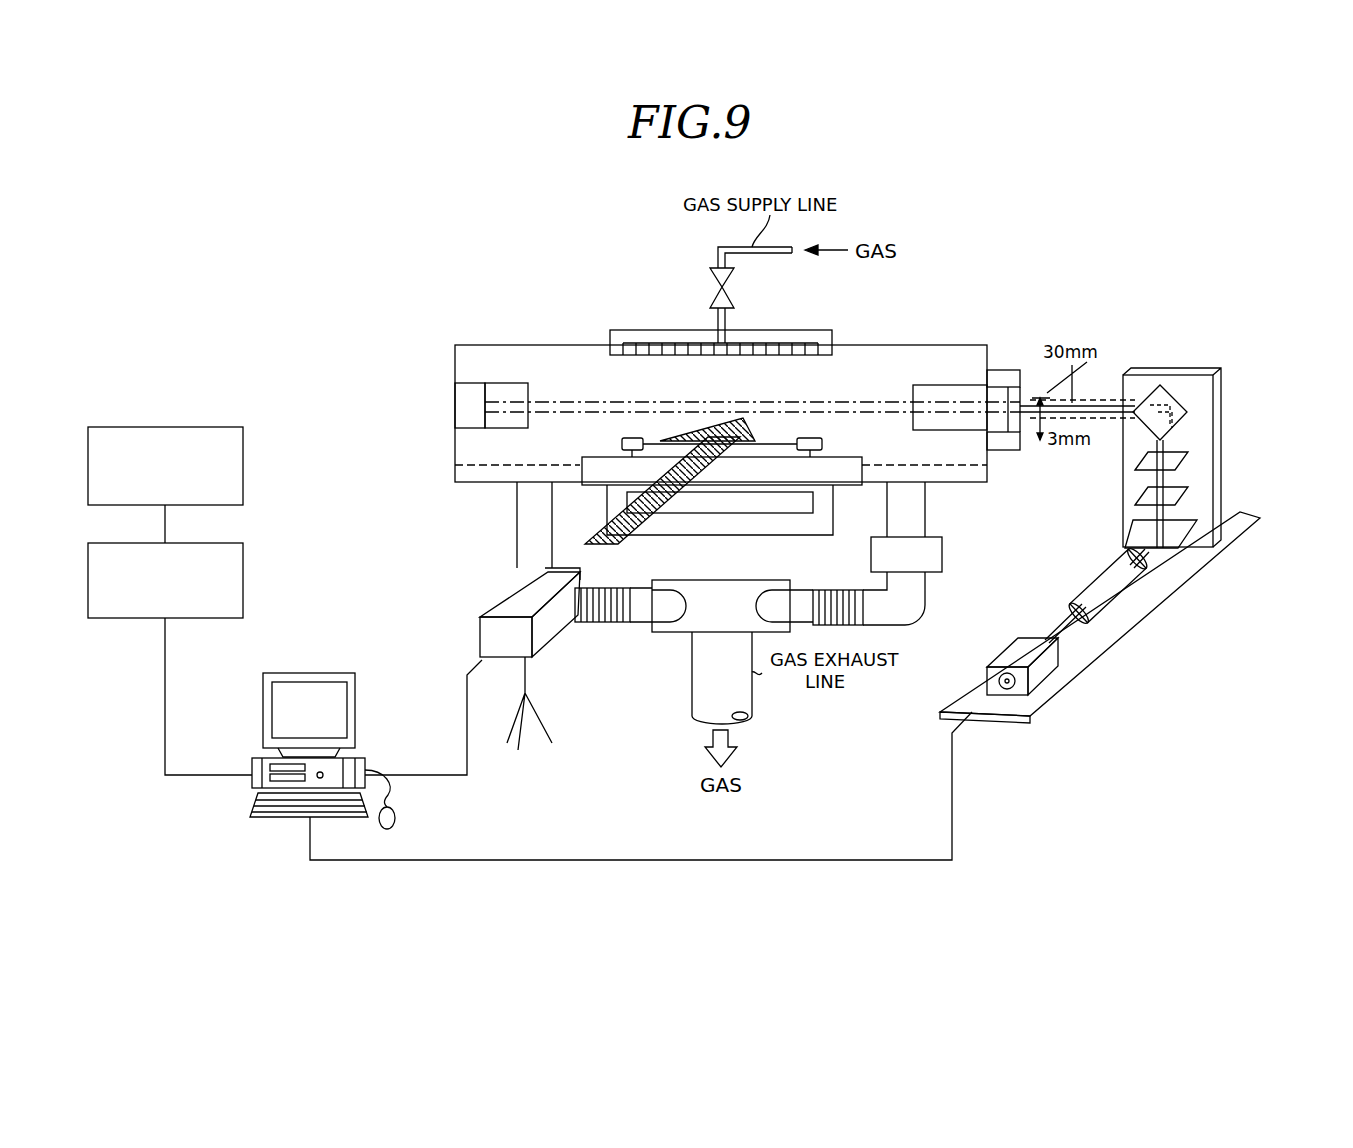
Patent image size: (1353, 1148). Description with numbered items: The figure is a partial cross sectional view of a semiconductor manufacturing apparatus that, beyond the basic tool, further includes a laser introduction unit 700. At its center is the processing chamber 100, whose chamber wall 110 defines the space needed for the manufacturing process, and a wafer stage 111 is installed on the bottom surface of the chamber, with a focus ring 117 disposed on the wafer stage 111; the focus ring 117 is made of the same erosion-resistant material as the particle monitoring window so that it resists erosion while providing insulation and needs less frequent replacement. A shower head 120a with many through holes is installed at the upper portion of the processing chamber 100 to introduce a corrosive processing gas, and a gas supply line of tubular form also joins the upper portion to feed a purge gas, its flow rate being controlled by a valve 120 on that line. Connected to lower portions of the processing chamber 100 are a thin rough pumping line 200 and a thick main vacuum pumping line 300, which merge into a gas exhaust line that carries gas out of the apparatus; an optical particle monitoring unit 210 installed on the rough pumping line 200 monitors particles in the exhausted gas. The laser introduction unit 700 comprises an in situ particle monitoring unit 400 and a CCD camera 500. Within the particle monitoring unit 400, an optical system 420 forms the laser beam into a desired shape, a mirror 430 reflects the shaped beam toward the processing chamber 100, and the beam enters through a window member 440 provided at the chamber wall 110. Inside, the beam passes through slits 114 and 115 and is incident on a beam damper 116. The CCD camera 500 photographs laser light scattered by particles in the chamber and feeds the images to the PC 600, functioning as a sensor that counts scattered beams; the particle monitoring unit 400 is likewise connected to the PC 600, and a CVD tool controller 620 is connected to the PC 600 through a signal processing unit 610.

The processing chamber 100 is at (699, 381).
The chamber wall 110 is at (455, 362).
The wafer stage 111 is at (838, 462).
The slit 114 is at (943, 383).
The slit 115 is at (497, 383).
The beam damper 116 is at (462, 408).
The focus ring 117 is at (622, 444).
The valve 120 is at (712, 292).
The shower head 120a is at (765, 330).
The rough pumping line 200 is at (930, 508).
The optical particle monitoring unit 210 is at (942, 552).
The main vacuum pumping line 300 is at (514, 546).
The in situ particle monitoring unit 400 is at (1129, 545).
The optical system 420 is at (1113, 585).
The mirror 430 is at (1180, 408).
The window member 440 is at (1000, 382).
The CCD camera 500 is at (497, 594).
The PC 600 is at (310, 672).
The signal processing unit 610 is at (243, 580).
The CVD tool controller 620 is at (243, 466).
The laser introduction unit 700 is at (975, 834).